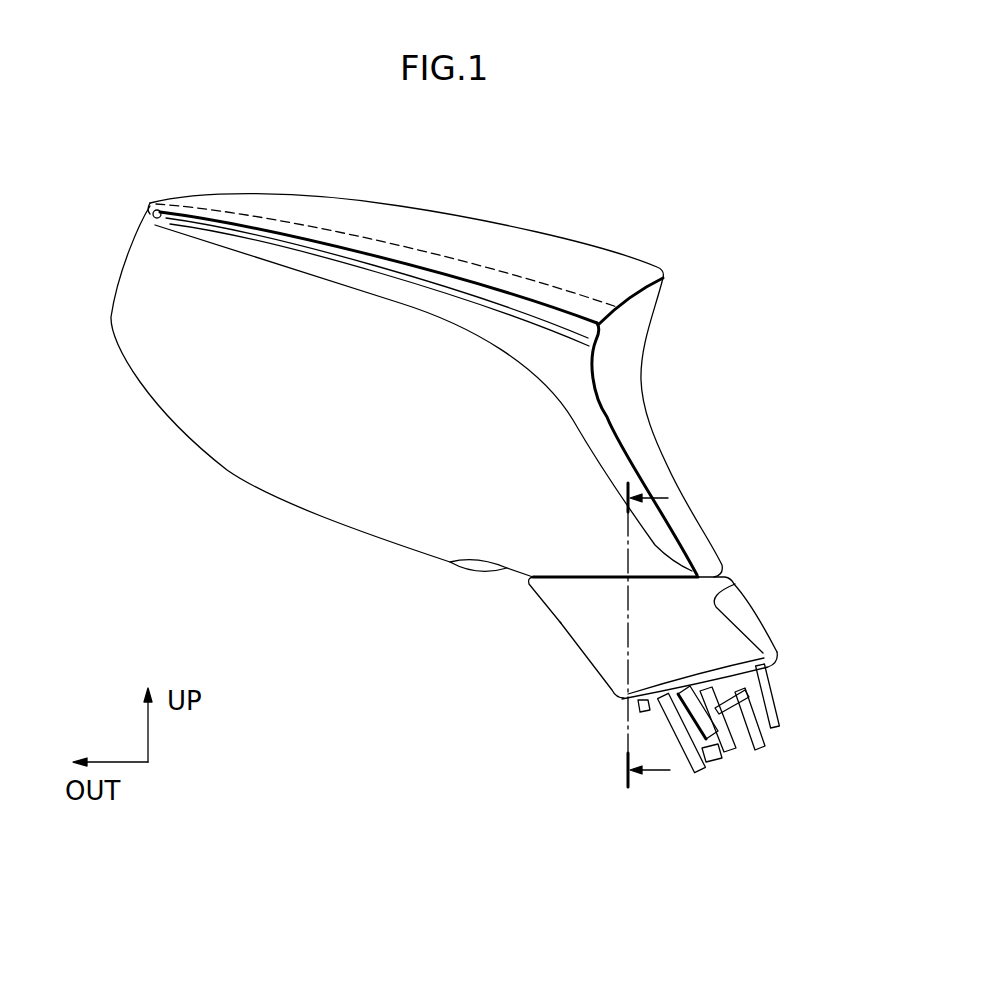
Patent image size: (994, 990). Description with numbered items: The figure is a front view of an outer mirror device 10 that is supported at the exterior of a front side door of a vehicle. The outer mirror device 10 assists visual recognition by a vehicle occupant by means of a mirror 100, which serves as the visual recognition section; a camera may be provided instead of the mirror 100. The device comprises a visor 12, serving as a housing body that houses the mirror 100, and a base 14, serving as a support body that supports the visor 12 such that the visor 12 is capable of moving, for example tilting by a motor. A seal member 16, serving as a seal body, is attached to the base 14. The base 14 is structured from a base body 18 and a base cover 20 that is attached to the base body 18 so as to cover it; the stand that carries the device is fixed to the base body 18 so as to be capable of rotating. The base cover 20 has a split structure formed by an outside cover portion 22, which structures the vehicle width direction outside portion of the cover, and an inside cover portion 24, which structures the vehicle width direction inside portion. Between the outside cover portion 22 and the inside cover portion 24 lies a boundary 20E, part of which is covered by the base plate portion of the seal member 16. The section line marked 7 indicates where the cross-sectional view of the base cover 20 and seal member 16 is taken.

The outer mirror device 10 is at (163, 457).
The mirror 100 is at (393, 230).
The visor 12 is at (495, 248).
The seal member 16 is at (653, 577).
The base 14 is at (677, 637).
The base cover 20 is at (618, 672).
The outside cover portion 22 is at (572, 620).
The boundary 20E is at (731, 582).
The inside cover portion 24 is at (765, 644).
The base body 18 is at (768, 670).
The section line of FIG. 7 is at (655, 497).